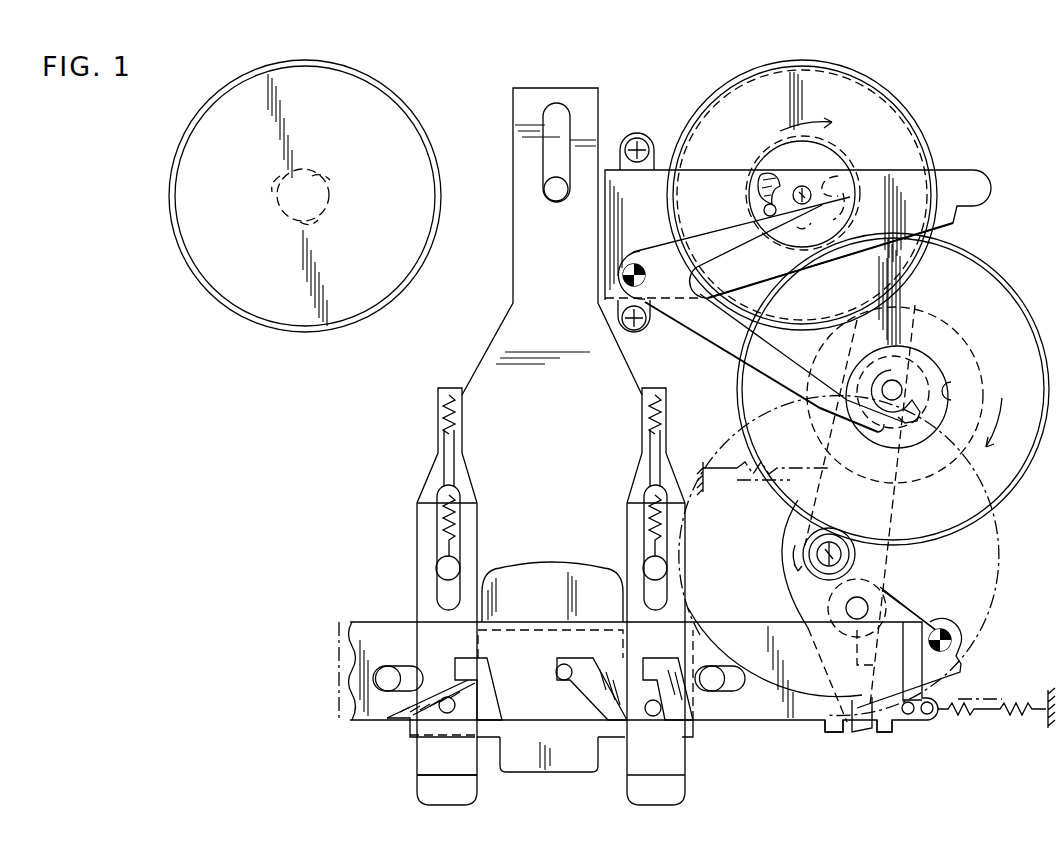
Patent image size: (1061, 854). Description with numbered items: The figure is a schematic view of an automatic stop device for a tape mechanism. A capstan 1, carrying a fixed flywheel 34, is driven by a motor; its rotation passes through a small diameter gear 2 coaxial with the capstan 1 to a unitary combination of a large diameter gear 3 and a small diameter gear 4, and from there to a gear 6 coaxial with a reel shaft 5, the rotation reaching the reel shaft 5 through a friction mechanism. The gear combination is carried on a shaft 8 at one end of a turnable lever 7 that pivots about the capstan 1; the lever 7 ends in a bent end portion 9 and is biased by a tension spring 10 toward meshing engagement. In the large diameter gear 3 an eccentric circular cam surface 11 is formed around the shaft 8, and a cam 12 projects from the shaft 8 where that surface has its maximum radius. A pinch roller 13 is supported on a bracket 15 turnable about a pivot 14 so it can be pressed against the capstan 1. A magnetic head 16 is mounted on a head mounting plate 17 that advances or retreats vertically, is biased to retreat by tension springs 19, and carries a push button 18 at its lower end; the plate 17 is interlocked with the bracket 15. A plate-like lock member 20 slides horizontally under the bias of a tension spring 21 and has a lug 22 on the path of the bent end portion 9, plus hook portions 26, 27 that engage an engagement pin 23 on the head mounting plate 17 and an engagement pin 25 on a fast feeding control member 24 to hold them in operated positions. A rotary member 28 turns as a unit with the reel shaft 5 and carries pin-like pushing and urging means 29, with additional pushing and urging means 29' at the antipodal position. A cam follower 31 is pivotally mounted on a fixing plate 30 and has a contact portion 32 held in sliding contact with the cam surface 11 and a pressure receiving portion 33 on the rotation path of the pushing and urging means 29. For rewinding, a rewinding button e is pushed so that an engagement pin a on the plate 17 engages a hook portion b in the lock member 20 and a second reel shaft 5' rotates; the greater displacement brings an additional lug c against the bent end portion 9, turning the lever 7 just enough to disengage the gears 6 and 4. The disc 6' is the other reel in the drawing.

The capstan 1 is at (812, 543).
The small diameter gear 2 is at (857, 545).
The large diameter gear 3 is at (1010, 282).
The small diameter gear 4 is at (960, 334).
The reel shaft 5 is at (827, 153).
The reel shaft 5' is at (326, 189).
The gear 6 is at (828, 200).
The supply reel 6' is at (284, 196).
The turnable lever 7 is at (780, 575).
The shaft 8 is at (888, 384).
The bent end portion 9 is at (867, 732).
The tension spring 10 is at (704, 466).
The eccentric circular cam surface 11 is at (942, 386).
The cam 12 is at (902, 422).
The pinch roller 13 is at (882, 582).
The pivot 14 is at (962, 636).
The bracket 15 is at (937, 623).
The magnetic head 16 is at (562, 567).
The head mounting plate 17 is at (480, 372).
The push button 18 is at (530, 768).
The tension springs 19 is at (452, 420).
The lock member 20 is at (750, 727).
The tension spring 21 is at (1012, 702).
The lug 22 is at (832, 733).
The engagement pin 23 is at (565, 665).
The fast feeding control member 24 is at (687, 748).
The engagement pin 25 is at (650, 718).
The hook portion 26 is at (563, 700).
The hook portion 27 is at (645, 658).
The rotary member 28 is at (765, 162).
The pushing and urging means 29 is at (756, 199).
The pushing and urging means 29' is at (862, 177).
The fixing plate 30 is at (893, 165).
The cam follower 31 is at (687, 338).
The contact portion 32 is at (878, 450).
The pressure receiving portion 33 is at (785, 232).
The flywheel 34 is at (990, 540).
The engagement pin a is at (440, 718).
The hook portion b is at (447, 715).
The lug c is at (897, 728).
The rewinding button e is at (482, 766).